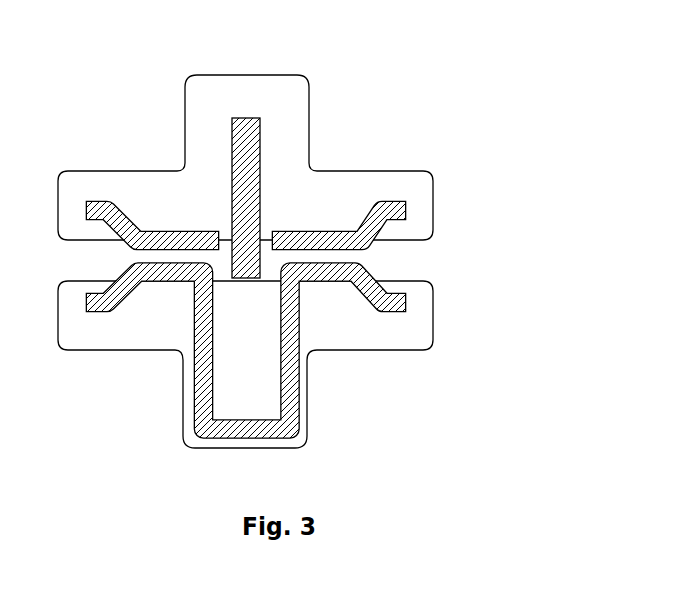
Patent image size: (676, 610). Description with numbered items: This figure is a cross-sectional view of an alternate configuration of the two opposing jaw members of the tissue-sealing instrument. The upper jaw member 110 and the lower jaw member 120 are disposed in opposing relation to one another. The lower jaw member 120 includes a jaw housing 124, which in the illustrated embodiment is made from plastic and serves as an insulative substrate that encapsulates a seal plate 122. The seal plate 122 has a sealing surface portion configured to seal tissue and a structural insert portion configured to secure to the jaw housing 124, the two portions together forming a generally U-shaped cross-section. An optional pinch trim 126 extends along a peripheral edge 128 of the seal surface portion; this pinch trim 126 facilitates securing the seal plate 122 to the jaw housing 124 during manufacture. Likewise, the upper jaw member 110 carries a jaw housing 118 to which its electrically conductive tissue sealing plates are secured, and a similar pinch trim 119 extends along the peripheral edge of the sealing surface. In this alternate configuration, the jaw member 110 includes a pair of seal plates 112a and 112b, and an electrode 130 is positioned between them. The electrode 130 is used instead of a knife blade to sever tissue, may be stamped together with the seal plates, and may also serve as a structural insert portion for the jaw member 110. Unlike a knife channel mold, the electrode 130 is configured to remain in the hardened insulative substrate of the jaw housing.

The jaw member 110 is at (364, 84).
The jaw housing 118 is at (310, 132).
The pinch trim 119 is at (397, 203).
The seal plate 112a is at (147, 250).
The seal plate 112b is at (354, 252).
The seal plate 122 is at (354, 264).
The peripheral edge 128 is at (368, 267).
The pinch trim 126 is at (393, 312).
The jaw housing 124 is at (309, 385).
The jaw member 120 is at (358, 455).
The electrode 130 is at (232, 167).